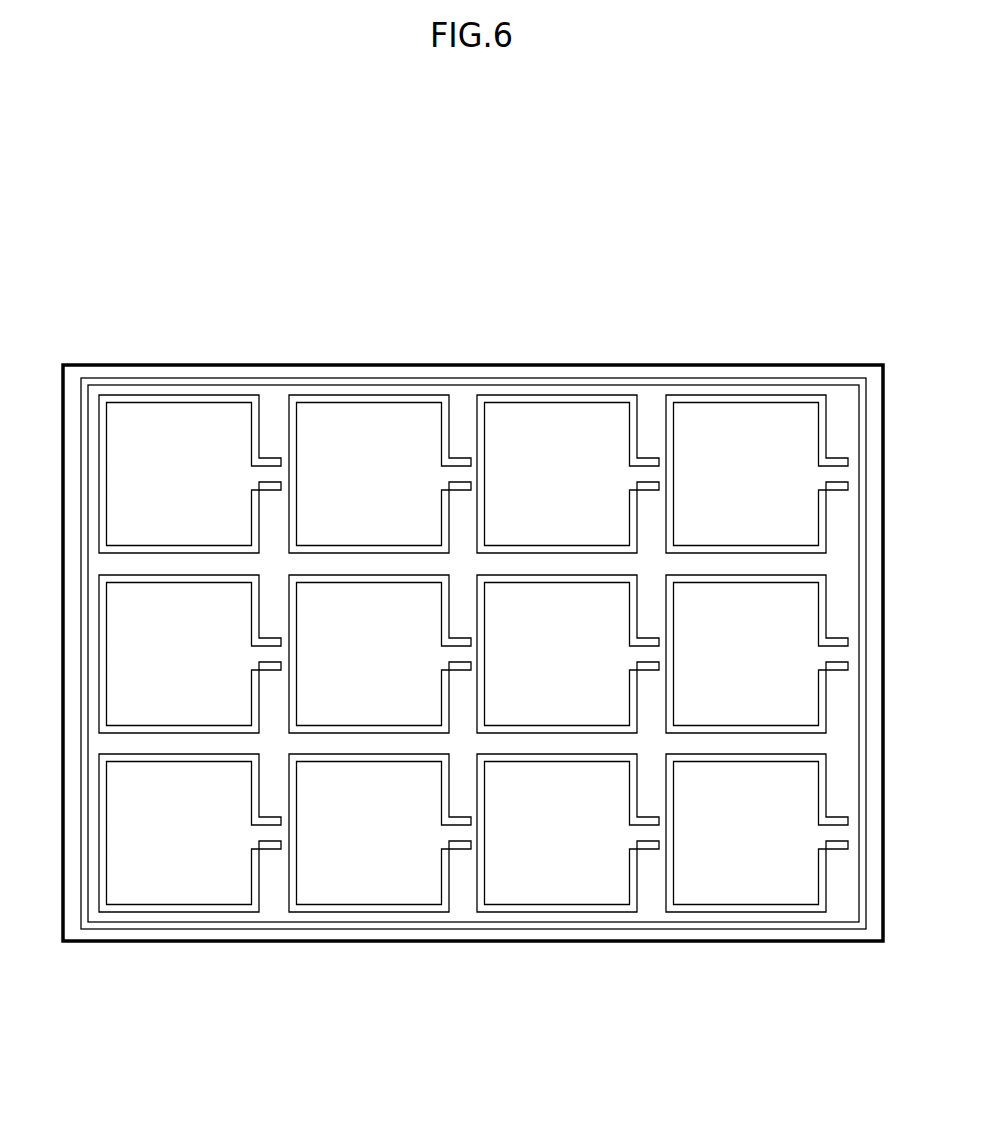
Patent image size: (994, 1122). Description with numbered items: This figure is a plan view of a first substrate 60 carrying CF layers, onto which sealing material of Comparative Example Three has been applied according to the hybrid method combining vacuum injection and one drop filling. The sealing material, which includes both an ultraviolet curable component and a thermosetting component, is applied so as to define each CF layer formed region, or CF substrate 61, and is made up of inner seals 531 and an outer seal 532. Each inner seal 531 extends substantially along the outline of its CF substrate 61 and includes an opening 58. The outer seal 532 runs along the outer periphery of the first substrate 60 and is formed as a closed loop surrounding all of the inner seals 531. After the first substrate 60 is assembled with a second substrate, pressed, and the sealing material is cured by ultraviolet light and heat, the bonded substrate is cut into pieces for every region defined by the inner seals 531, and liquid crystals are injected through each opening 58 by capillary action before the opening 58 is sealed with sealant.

The first substrate 60 is at (773, 347).
The CF substrate 61 is at (185, 415).
The inner seal 531 is at (510, 907).
The outer seal 532 is at (225, 925).
The opening 58 is at (636, 843).